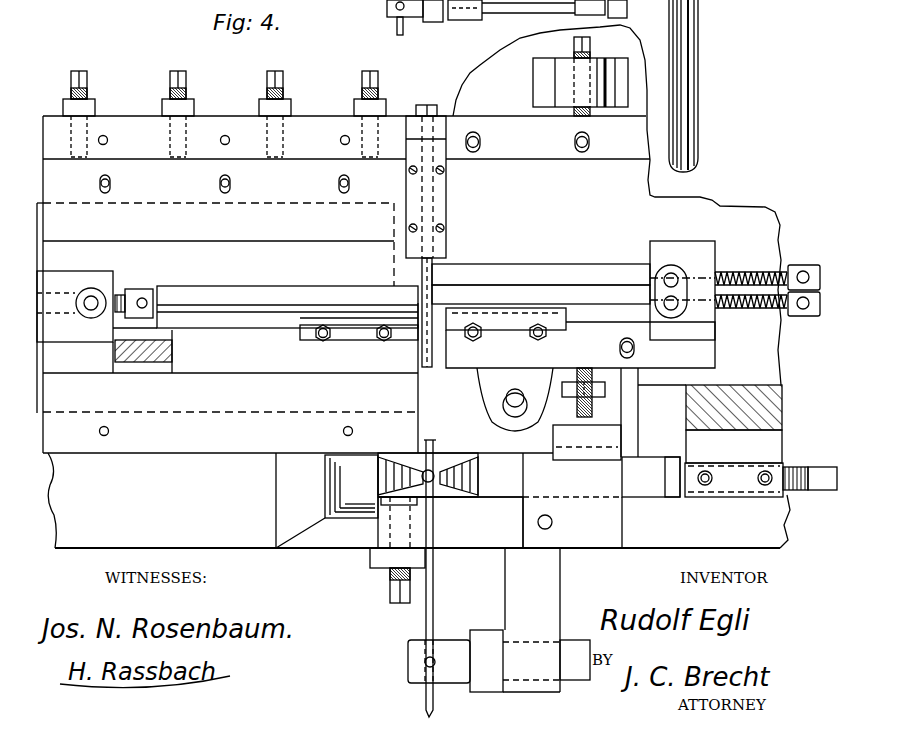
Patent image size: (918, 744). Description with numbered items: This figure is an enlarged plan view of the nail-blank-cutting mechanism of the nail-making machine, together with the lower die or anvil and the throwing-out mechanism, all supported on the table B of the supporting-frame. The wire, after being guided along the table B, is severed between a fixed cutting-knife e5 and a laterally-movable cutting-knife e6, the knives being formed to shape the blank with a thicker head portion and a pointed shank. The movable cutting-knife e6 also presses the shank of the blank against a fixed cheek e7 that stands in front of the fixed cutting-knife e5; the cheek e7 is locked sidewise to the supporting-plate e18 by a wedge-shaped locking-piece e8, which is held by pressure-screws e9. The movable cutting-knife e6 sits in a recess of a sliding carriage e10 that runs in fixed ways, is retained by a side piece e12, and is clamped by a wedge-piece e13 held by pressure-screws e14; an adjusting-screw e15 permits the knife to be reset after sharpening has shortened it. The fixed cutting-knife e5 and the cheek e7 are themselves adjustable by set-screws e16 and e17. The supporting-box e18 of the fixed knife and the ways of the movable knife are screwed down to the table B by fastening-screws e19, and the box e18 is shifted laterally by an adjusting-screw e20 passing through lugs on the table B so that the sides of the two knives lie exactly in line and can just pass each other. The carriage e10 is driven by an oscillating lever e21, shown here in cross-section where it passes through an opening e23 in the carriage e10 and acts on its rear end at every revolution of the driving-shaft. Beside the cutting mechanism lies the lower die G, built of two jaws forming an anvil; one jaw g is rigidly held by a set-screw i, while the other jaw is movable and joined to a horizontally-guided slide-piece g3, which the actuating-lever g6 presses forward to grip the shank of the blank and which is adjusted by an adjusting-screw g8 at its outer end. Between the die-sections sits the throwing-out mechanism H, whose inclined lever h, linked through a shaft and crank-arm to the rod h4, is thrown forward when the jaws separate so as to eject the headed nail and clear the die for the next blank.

The fixed cutting-knife e5 is at (541, 274).
The movable cutting-knife e6 is at (359, 302).
The fixed cheek e7 is at (541, 295).
The wedge-shaped locking-piece e8 is at (580, 338).
The pressure-screws e9 is at (533, 331).
The sliding carriage e10 is at (265, 311).
The side piece e12 is at (343, 284).
The wedge-piece e13 is at (359, 324).
The pressure-screws e14 is at (354, 337).
The adjusting-screw e15 is at (96, 305).
The set-screw e16 is at (702, 290).
The set-screw e17 is at (767, 298).
The supporting-box e18 is at (480, 236).
The fastening-screws e19 is at (672, 373).
The adjusting-screw e20 is at (586, 56).
The oscillating lever e21 is at (148, 362).
The opening e23 is at (172, 350).
The jaw of lower die g is at (433, 475).
The slide-piece g3 is at (650, 477).
The actuating-lever g6 is at (740, 406).
The adjusting-screw g8 is at (818, 490).
The lower die G is at (414, 500).
The throwing-out lever h is at (436, 578).
The throwing-out mechanism H is at (499, 620).
The set-screw i is at (396, 588).
The rod h4 is at (507, 17).
The table B is at (610, 242).